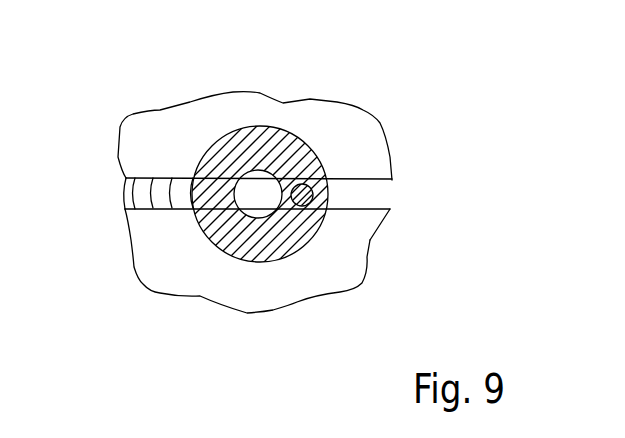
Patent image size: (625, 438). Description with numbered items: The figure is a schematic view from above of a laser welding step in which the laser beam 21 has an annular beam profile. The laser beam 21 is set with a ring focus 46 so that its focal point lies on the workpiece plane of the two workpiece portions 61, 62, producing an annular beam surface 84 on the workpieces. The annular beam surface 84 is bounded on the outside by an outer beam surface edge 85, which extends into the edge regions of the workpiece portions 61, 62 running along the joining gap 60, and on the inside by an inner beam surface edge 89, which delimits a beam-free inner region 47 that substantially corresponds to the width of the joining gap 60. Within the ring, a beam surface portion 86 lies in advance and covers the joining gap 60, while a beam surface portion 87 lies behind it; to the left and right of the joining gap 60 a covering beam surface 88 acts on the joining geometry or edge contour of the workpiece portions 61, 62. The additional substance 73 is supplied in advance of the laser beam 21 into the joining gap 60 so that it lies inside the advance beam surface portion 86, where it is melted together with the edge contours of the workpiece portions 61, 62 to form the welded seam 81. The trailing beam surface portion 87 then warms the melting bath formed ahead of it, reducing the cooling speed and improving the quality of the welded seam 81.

The laser beam 21 is at (214, 132).
The ring focus 46 is at (212, 272).
The inner region 47 is at (259, 161).
The joining gap 60 is at (375, 195).
The workpiece portion 61 is at (352, 127).
The workpiece portion 62 is at (353, 247).
The additional substance 73 is at (312, 189).
The welded seam 81 is at (145, 196).
The annular beam surface 84 is at (268, 249).
The outer beam surface edge 85 is at (292, 150).
The beam surface portion 86 is at (378, 232).
The beam surface portion 87 is at (209, 190).
The covering beam surface 88 is at (250, 238).
The inner beam surface edge 89 is at (282, 165).